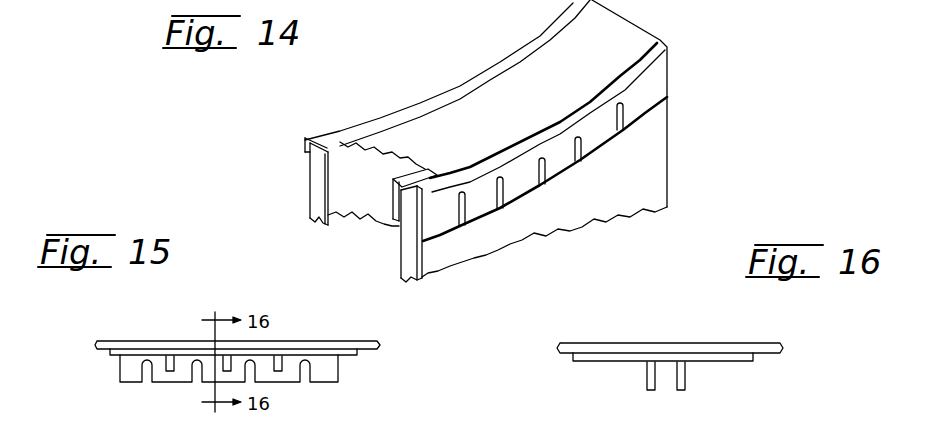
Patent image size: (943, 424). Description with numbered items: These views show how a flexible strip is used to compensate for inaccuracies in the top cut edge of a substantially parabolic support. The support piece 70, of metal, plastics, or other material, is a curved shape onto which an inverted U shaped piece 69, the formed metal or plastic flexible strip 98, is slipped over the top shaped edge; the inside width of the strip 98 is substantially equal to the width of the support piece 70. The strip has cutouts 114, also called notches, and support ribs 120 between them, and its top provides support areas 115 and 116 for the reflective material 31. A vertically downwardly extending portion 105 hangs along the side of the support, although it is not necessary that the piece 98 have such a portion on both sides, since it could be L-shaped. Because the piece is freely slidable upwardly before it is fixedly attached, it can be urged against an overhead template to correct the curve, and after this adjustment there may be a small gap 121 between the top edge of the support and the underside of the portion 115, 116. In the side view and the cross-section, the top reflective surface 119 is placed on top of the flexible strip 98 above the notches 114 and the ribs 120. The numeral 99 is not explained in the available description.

In FIG. 14, the reflective material 31 is at (622, 40).
In FIG. 14, the inverted U shaped piece 69 is at (416, 255).
In FIG. 15, the inverted U shaped piece 69 is at (323, 372).
In FIG. 16, the inverted U shaped piece 69 is at (722, 362).
In FIG. 14, the support piece 70 is at (655, 170).
In FIG. 14, the flexible strip 98 is at (653, 87).
In FIG. 15, the flexible strip 98 is at (347, 354).
In FIG. 16, the flexible strip 98 is at (735, 363).
In FIG. 14, the end post 99 is at (405, 197).
In FIG. 14, the vertically downwardly extending portion 105 is at (307, 155).
In FIG. 14, the cutouts 114 is at (609, 128).
In FIG. 15, the cutouts 114 is at (146, 380).
In FIG. 14, the support area 115 is at (343, 137).
In FIG. 14, the support area 116 is at (510, 155).
In FIG. 15, the top reflective surface 119 is at (162, 345).
In FIG. 16, the top reflective surface 119 is at (692, 352).
In FIG. 15, the support ribs 120 is at (278, 372).
In FIG. 16, the support ribs 120 is at (650, 365).
In FIG. 14, the gap 121 is at (396, 185).